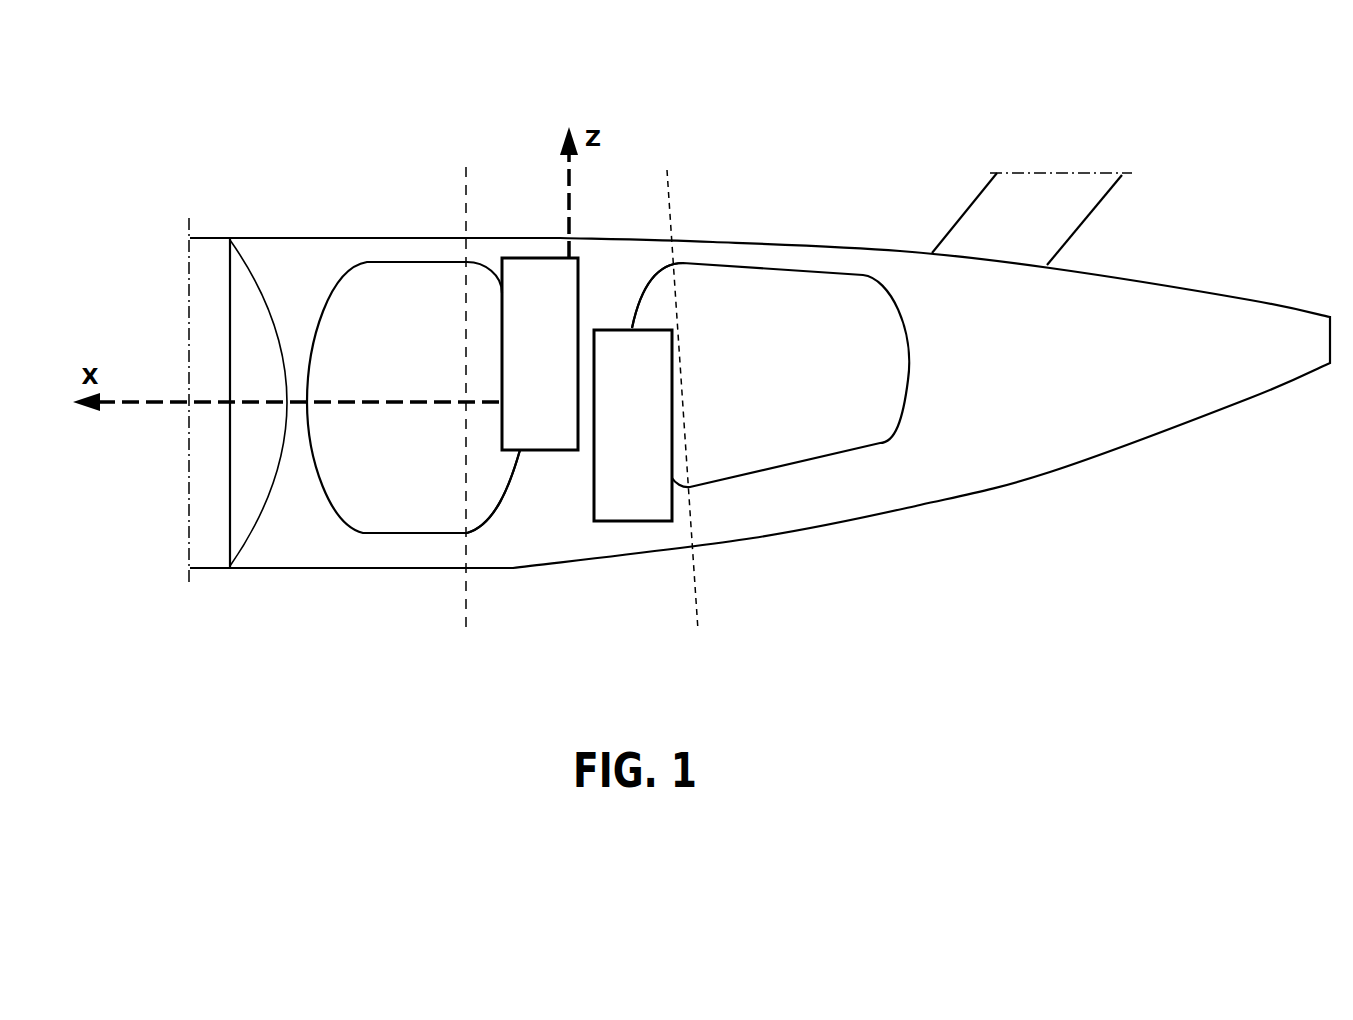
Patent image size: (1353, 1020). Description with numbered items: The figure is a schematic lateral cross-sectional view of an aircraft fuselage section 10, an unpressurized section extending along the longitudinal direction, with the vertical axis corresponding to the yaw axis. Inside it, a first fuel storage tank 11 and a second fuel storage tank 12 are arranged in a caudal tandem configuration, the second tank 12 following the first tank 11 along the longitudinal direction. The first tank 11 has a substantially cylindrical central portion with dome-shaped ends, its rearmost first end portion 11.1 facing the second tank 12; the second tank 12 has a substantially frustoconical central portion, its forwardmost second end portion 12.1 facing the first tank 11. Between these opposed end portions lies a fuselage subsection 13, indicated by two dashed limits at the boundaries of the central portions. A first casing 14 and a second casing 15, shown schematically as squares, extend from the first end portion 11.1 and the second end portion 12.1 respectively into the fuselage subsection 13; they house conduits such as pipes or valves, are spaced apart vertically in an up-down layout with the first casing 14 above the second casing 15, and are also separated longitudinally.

The aircraft fuselage section 10 is at (240, 208).
The first fuel storage tank 11 is at (417, 293).
The first end portion 11.1 is at (487, 482).
The second fuel storage tank 12 is at (815, 295).
The second end portion 12.1 is at (662, 308).
The fuselage subsection 13 is at (557, 597).
The first casing 14 is at (532, 258).
The second casing 15 is at (630, 521).